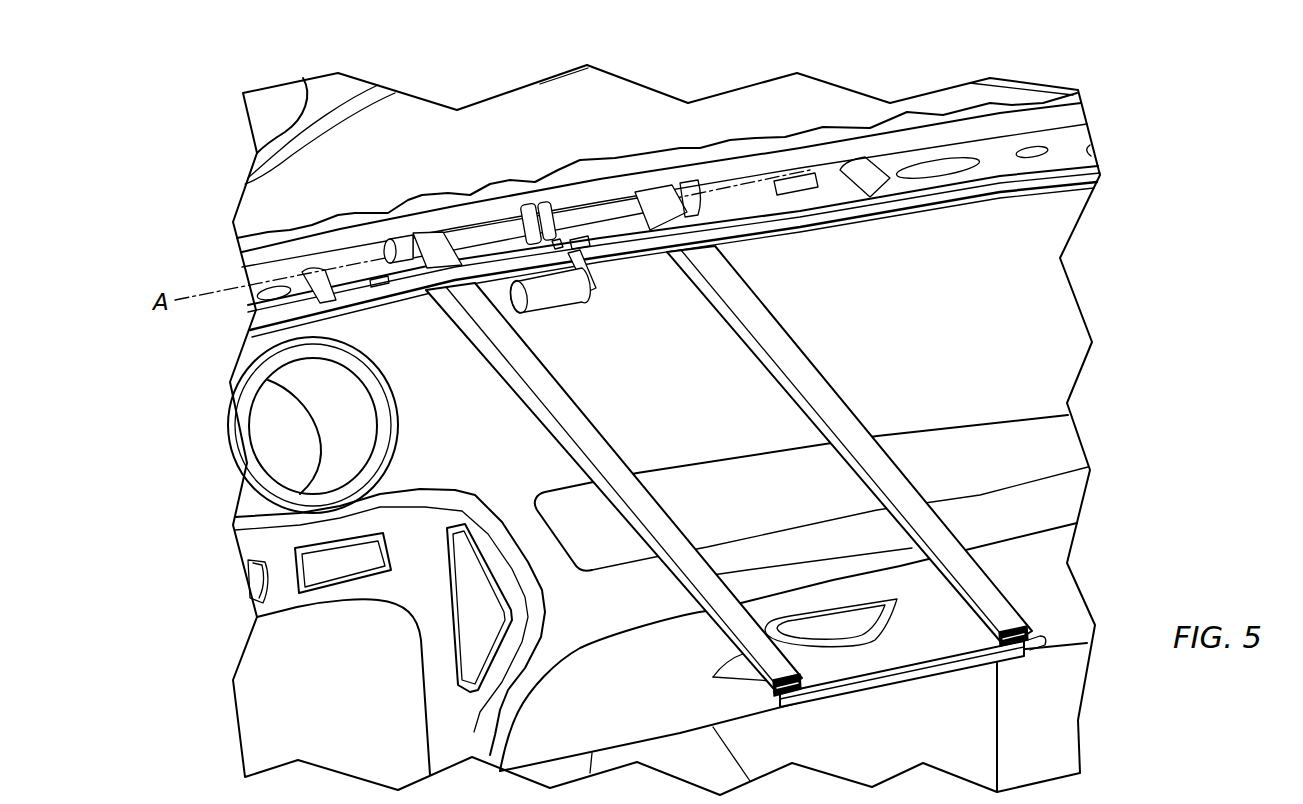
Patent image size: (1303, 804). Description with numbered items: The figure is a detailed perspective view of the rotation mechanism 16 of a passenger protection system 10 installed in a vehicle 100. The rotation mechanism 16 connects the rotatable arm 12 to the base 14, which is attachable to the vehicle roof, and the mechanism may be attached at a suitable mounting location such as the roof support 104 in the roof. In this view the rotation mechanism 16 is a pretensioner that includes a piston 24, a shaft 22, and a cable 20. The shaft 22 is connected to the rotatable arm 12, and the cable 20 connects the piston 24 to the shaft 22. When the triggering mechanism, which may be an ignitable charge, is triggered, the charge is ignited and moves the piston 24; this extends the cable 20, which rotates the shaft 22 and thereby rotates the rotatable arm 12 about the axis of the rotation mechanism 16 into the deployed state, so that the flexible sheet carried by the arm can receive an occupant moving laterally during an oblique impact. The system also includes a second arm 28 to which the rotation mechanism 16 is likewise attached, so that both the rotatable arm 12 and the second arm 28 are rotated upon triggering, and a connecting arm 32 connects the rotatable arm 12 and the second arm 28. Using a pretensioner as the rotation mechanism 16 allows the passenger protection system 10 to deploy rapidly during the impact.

The passenger protection system 10 is at (180, 125).
The vehicle 100 is at (724, 86).
The roof support 104 is at (1073, 122).
The base 14 is at (597, 450).
The shaft 22 is at (487, 235).
The cable 20 is at (557, 237).
The rotation mechanism 16 is at (582, 305).
The piston 24 is at (556, 302).
The rotatable arm 12 is at (776, 698).
The second arm 28 is at (1023, 641).
The connecting arm 32 is at (880, 678).